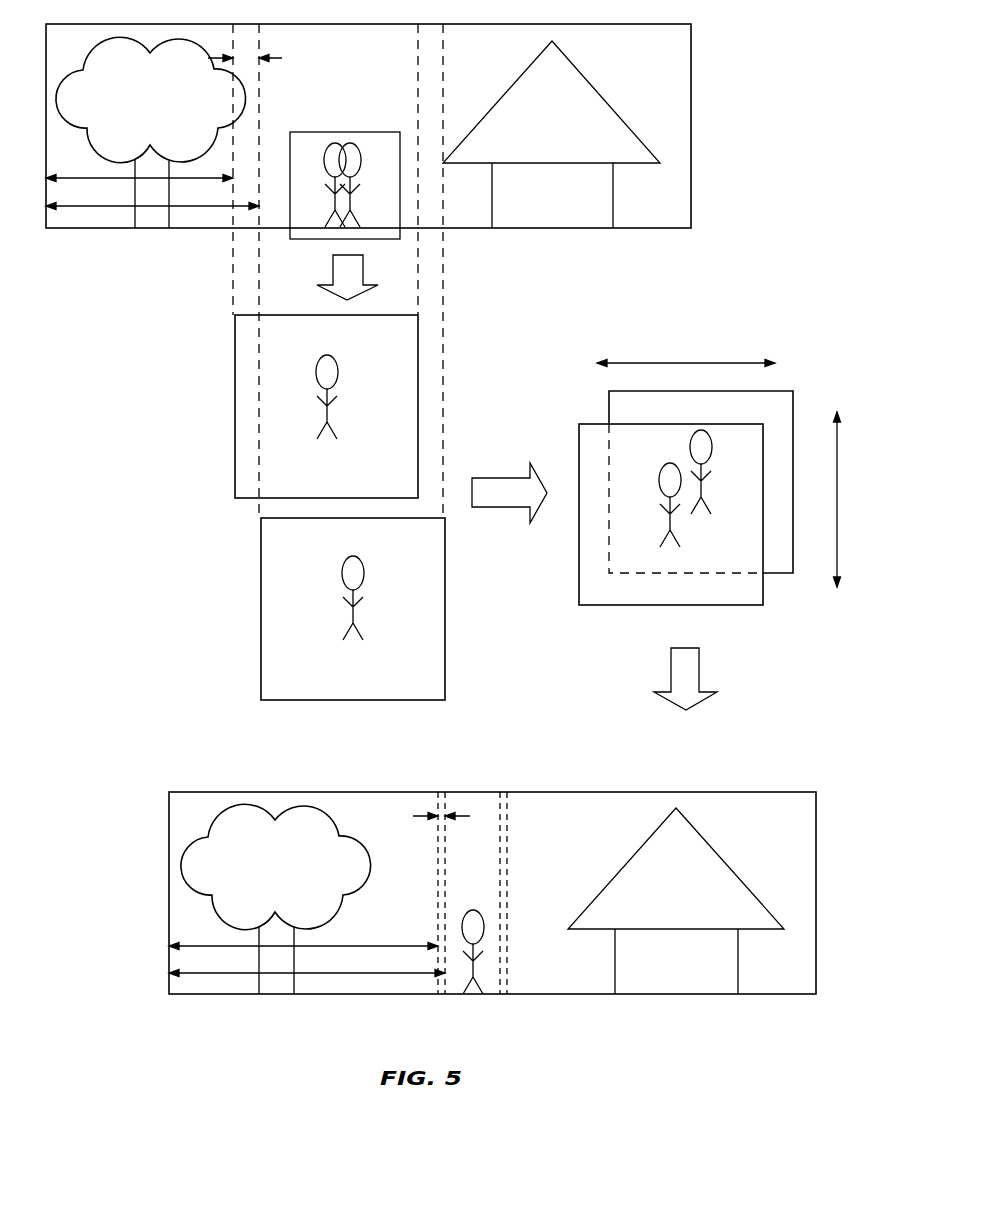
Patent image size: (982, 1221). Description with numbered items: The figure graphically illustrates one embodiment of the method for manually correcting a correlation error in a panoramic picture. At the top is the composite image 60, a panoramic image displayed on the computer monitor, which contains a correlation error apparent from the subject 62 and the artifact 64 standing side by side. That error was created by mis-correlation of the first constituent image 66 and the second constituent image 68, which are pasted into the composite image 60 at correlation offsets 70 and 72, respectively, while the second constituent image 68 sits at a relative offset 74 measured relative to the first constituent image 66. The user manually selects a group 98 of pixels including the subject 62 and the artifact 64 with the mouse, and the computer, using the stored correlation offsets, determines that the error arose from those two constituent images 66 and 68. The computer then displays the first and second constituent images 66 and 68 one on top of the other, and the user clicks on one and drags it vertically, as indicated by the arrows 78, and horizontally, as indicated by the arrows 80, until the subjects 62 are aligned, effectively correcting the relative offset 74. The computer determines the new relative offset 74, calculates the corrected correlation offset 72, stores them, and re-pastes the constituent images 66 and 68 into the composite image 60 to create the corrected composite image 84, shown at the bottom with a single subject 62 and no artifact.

The composite image 60 is at (691, 90).
The subject 62 is at (350, 145).
The artifact 64 is at (336, 143).
The first constituent image 66 is at (235, 396).
The second constituent image 68 is at (261, 562).
The correlation offset 70 is at (88, 176).
The correlation offset 72 is at (200, 208).
The relative offset 74 is at (244, 38).
The arrows 78 is at (836, 572).
The arrows 80 is at (706, 360).
The corrected composite image 84 is at (603, 791).
The group of pixels 98 is at (376, 132).